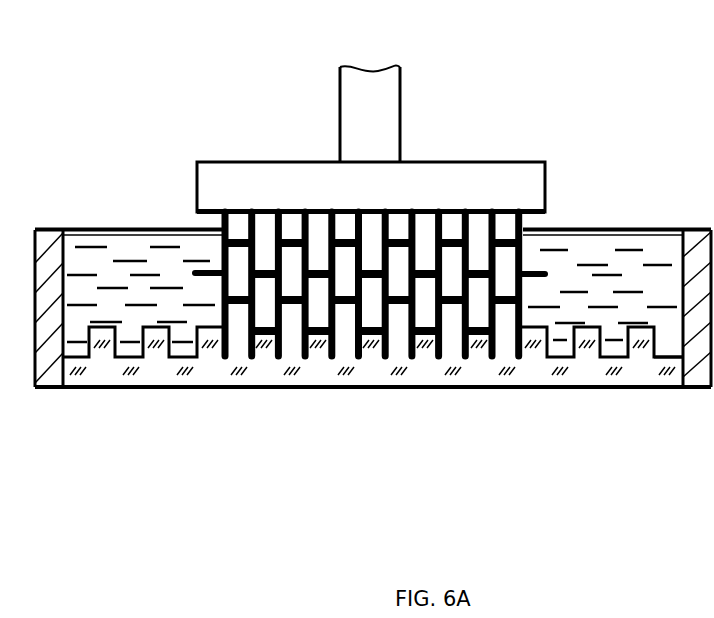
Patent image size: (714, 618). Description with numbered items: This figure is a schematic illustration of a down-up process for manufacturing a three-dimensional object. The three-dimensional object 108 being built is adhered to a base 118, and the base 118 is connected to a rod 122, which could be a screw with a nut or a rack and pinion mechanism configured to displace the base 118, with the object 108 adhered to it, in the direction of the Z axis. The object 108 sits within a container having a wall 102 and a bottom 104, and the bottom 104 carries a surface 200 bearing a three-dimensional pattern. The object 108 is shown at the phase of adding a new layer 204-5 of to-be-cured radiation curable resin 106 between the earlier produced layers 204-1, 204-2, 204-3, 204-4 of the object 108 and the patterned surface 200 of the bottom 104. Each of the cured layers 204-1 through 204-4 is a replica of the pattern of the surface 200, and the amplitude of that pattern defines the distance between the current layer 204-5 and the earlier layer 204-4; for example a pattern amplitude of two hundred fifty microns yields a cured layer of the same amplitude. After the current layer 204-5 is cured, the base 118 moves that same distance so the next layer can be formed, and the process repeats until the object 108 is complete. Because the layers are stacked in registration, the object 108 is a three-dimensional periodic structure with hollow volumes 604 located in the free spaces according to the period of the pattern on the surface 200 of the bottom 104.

The container wall 102 is at (40, 230).
The bottom 104 is at (108, 375).
The radiation curable resin 106 is at (590, 240).
The 3D object 108 is at (178, 258).
The base 118 is at (293, 173).
The rod 122 is at (387, 98).
The surface 200 is at (650, 357).
The layer 204-1 is at (523, 222).
The layer 204-2 is at (523, 260).
The layer 204-3 is at (524, 283).
The layer 204-4 is at (469, 316).
The layer 204-5 is at (308, 338).
The hollow volumes 604 is at (236, 264).